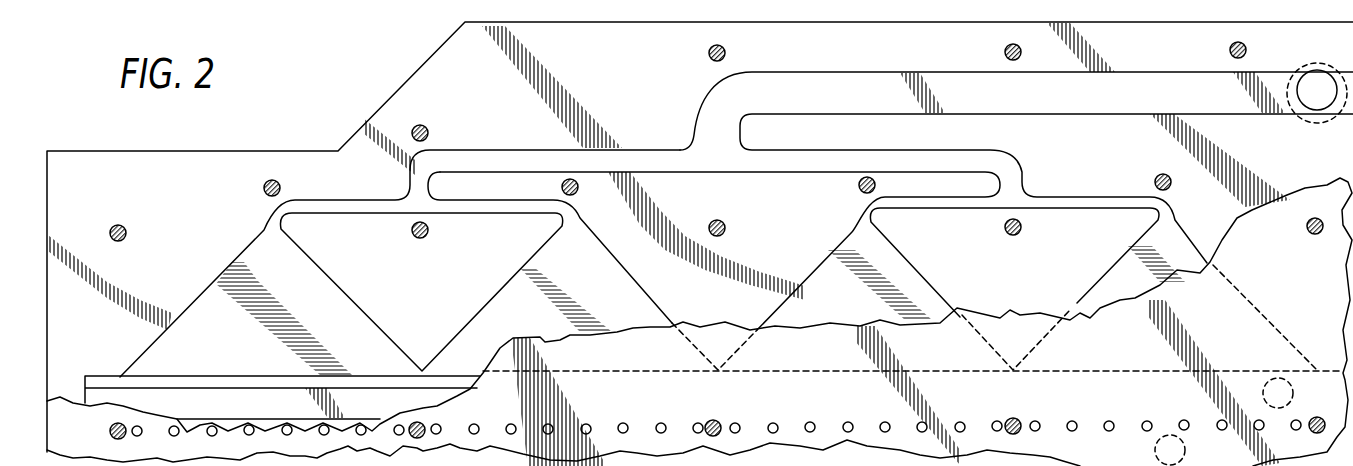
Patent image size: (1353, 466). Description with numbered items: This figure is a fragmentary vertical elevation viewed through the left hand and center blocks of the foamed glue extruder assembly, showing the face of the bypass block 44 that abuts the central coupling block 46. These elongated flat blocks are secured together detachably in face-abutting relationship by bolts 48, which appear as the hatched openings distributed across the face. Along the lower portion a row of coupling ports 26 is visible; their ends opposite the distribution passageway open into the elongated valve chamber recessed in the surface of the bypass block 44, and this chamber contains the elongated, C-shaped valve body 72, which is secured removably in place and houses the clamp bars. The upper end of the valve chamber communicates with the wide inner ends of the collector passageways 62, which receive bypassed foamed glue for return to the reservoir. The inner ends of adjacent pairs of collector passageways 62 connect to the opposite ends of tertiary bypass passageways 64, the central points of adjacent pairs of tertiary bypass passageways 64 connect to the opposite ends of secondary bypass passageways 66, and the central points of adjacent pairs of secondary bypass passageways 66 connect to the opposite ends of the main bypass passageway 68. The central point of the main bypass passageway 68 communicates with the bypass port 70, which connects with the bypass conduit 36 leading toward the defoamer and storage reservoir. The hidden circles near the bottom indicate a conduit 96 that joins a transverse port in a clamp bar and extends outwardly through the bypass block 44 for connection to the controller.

The coupling ports 26 is at (283, 423).
The bypass conduit 36 is at (1317, 64).
The bypass block 44 is at (209, 193).
The central coupling block 46 is at (720, 338).
The bolts 48 is at (717, 219).
The collector passageways 62 is at (517, 311).
The tertiary bypass passageways 64 is at (310, 204).
The secondary bypass passageways 66 is at (495, 160).
The main bypass passageway 68 is at (855, 87).
The bypass port 70 is at (1336, 88).
The valve body 72 is at (100, 377).
The conduit 96 is at (1293, 392).